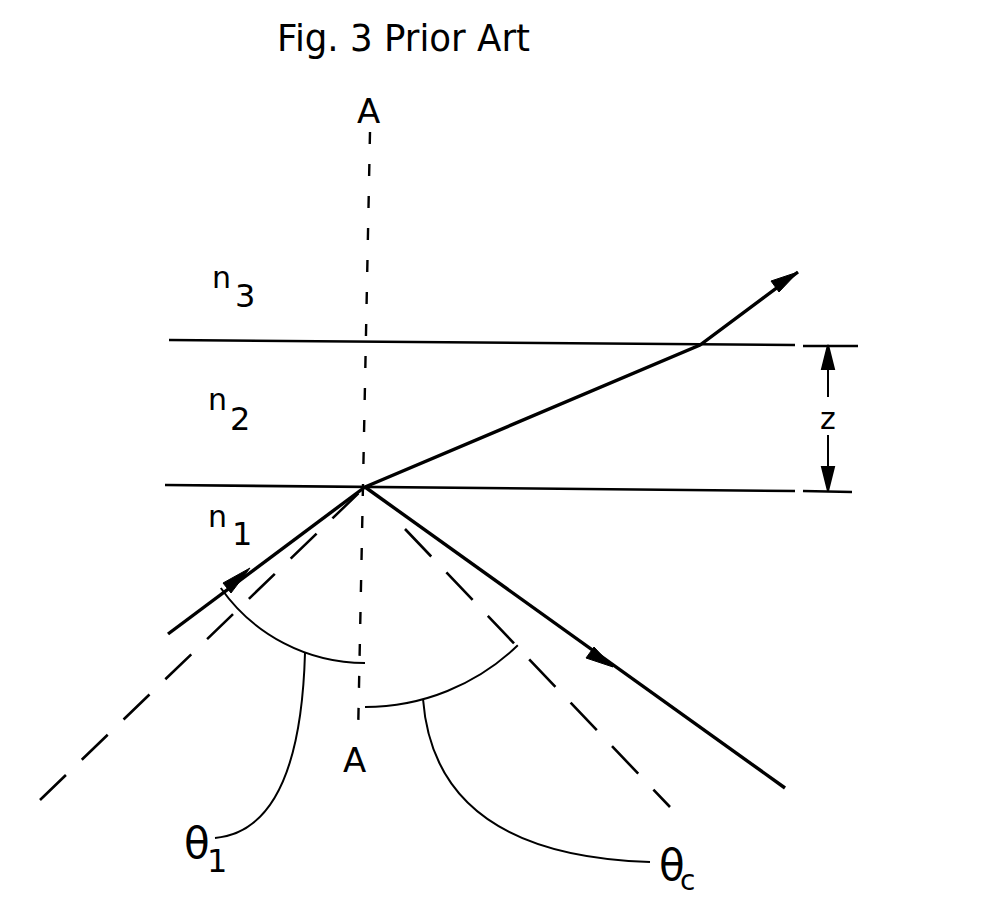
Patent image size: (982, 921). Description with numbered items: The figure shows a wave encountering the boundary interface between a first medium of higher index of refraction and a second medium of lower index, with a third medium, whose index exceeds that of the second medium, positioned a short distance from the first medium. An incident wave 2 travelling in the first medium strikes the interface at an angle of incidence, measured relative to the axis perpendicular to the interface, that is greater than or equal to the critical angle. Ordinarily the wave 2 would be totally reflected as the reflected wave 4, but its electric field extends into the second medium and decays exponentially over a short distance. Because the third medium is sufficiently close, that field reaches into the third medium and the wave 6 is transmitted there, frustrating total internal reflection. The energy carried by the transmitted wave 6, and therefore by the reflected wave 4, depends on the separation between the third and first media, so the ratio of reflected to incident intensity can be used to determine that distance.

The incident wave 2 is at (178, 623).
The reflected wave 4 is at (658, 697).
The transmitted wave 6 is at (587, 393).